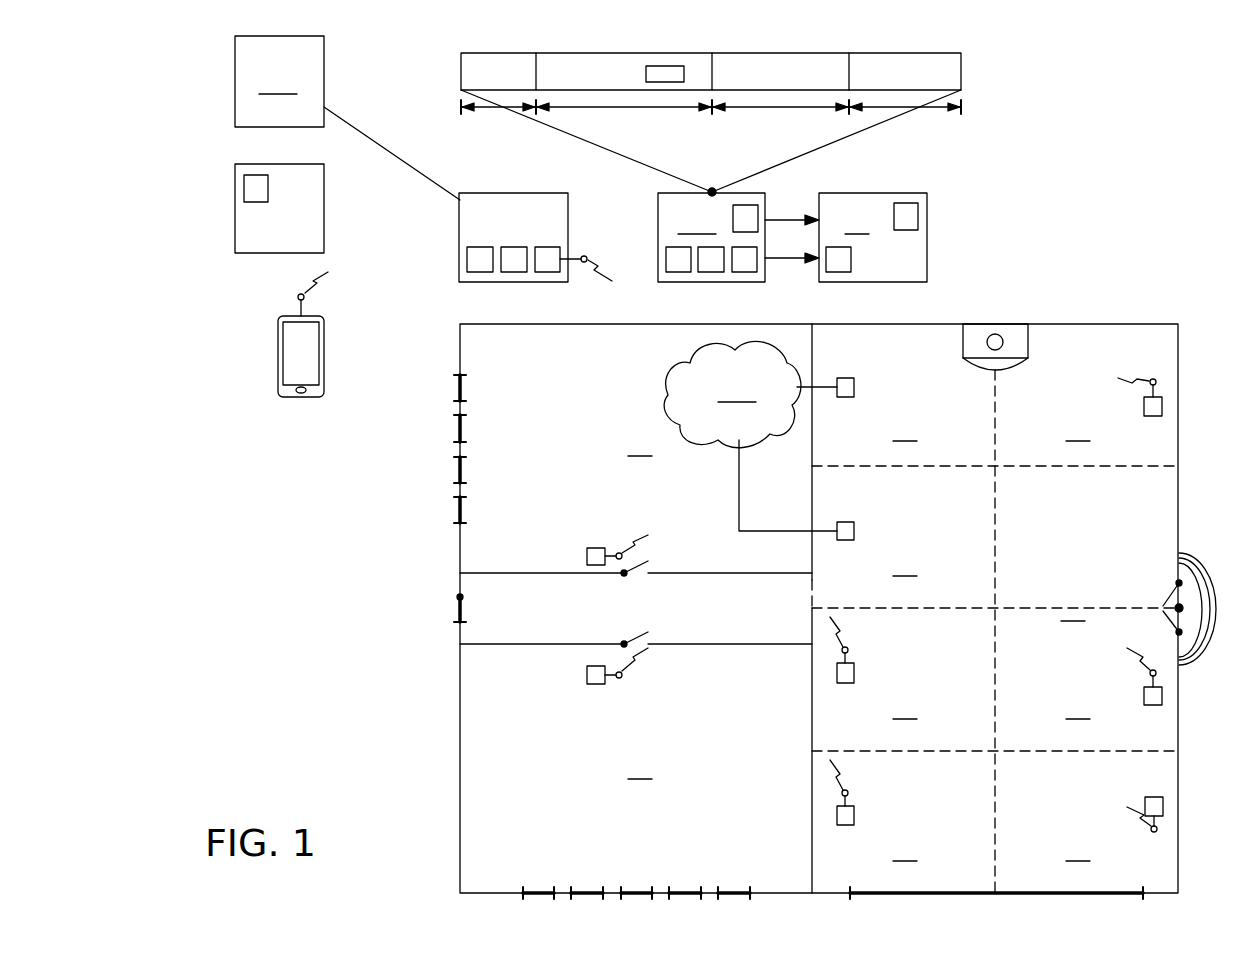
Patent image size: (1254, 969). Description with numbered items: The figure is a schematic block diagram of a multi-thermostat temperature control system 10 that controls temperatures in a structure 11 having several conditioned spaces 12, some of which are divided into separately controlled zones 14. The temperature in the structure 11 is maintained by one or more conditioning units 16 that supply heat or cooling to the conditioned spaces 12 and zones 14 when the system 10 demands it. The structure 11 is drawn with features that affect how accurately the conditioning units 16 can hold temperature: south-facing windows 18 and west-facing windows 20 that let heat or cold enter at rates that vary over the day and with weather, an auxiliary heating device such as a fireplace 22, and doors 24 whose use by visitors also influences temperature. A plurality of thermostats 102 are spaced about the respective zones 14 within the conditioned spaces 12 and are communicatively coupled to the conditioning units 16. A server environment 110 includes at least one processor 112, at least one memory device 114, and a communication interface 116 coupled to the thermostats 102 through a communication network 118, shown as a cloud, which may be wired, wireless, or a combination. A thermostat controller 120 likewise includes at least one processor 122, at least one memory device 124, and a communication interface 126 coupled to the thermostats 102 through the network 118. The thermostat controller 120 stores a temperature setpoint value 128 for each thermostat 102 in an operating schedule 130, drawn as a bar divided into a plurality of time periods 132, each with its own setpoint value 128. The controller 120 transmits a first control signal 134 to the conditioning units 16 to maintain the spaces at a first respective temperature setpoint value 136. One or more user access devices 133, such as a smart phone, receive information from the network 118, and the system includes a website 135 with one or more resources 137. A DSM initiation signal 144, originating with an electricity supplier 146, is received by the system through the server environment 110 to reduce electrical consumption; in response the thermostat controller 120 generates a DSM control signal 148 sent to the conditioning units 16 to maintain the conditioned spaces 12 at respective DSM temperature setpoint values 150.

The multi-thermostat temperature control system 10 is at (953, 272).
The structure 11 is at (1103, 323).
The conditioned spaces 12 is at (857, 605).
The separately controlled zones 14 is at (995, 631).
The conditioning units 16 is at (873, 237).
The south-facing windows 18 is at (535, 895).
The west-facing windows 20 is at (459, 390).
The fireplaces 22 is at (1013, 330).
The doors 24 is at (459, 611).
The thermostats 102 is at (587, 557).
The server environment 110 is at (468, 217).
The processor 112 is at (480, 273).
The memory device 114 is at (514, 273).
The communication interface 116 is at (553, 273).
The communication network 118 is at (732, 394).
The thermostat controller 120 is at (711, 237).
The processor 122 is at (680, 273).
The memory device 124 is at (712, 273).
The communication interface 126 is at (748, 273).
The temperature setpoint value 128 is at (476, 70).
The operating schedule 130 is at (808, 70).
The time periods 132 is at (490, 110).
The user access devices 133 is at (324, 361).
The first control signal 134 is at (806, 259).
The website 135 is at (318, 210).
The first respective temperature setpoint value 136 is at (666, 68).
The resources 137 is at (245, 189).
The DSM initiation signal 144 is at (371, 136).
The electricity supplier 146 is at (279, 81).
The DSM control signal 148 is at (790, 218).
The DSM temperature setpoint values 150 is at (748, 216).